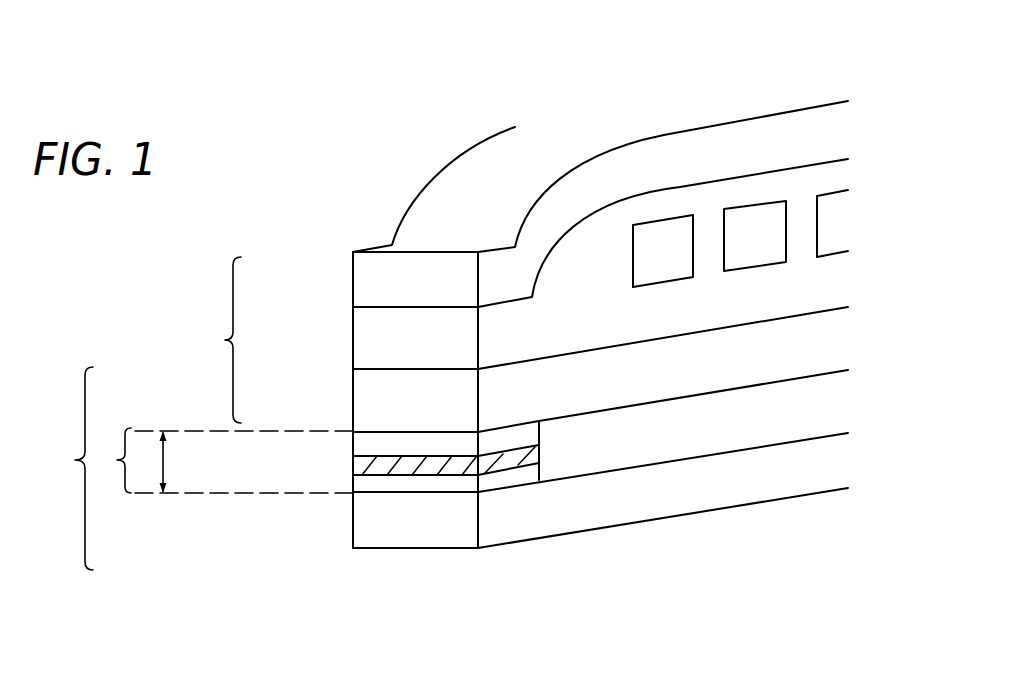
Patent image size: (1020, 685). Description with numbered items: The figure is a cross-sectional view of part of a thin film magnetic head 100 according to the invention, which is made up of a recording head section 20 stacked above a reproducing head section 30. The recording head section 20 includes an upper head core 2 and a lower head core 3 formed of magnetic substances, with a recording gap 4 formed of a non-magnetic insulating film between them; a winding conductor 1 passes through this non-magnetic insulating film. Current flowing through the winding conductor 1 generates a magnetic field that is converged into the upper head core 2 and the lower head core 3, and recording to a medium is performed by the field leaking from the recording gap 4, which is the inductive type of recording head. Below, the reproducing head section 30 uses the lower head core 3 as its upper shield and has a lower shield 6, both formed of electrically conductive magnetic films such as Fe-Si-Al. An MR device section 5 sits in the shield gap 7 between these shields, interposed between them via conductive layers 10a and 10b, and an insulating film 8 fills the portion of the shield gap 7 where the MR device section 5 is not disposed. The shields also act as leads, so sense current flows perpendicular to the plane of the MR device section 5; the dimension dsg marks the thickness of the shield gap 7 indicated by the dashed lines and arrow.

The thin film magnetic head 100 is at (737, 33).
The winding conductor 1 is at (680, 270).
The upper head core 2 is at (363, 278).
The recording gap 4 is at (367, 347).
The lower head core 3 is at (367, 400).
The conductive layer 10b is at (370, 447).
The MR device section 5 is at (515, 462).
The conductive layer 10a is at (382, 488).
The lower shield 6 is at (377, 535).
The shield gap 7 is at (224, 460).
The insulating film 8 is at (652, 442).
The recording head section 20 is at (208, 340).
The reproducing head section 30 is at (64, 468).
The thickness of intermediate layer region dsg is at (158, 465).